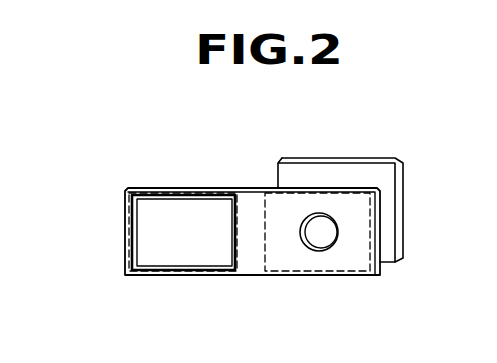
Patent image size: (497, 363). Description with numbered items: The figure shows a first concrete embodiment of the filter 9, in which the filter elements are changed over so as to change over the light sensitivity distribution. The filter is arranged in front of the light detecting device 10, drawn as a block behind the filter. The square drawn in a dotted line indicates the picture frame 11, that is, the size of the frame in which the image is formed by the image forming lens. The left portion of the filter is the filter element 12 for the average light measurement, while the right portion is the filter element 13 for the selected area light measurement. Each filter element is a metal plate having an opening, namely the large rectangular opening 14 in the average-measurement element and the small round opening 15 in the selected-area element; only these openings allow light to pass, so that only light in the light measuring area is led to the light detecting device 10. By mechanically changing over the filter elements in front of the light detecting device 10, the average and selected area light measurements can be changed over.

The filter 9 is at (143, 189).
The light detecting device 10 is at (403, 165).
The picture frame 11 is at (278, 189).
The filter element for average light measurement 12 is at (128, 289).
The filter element for selected area light measurement 13 is at (380, 290).
The opening 14 is at (133, 240).
The opening 15 is at (338, 228).